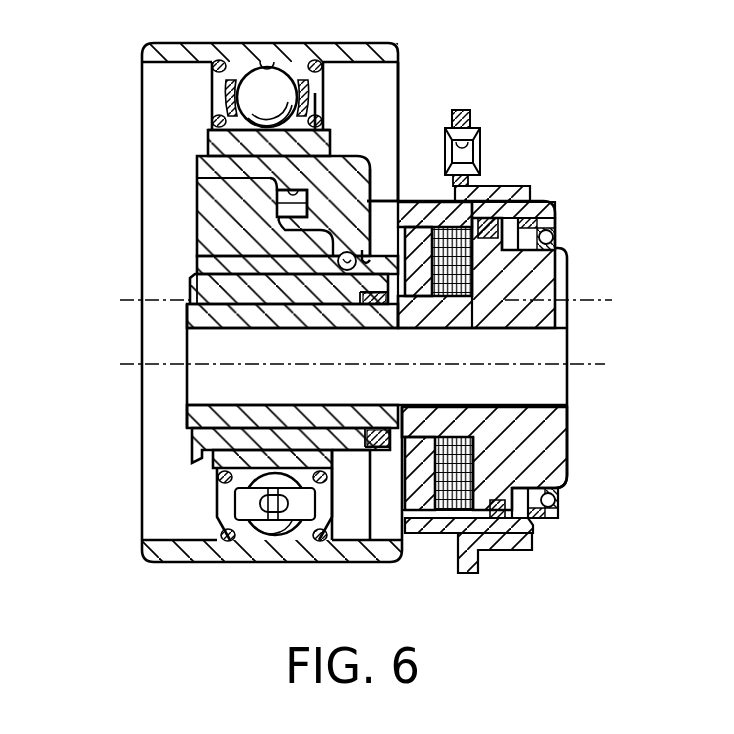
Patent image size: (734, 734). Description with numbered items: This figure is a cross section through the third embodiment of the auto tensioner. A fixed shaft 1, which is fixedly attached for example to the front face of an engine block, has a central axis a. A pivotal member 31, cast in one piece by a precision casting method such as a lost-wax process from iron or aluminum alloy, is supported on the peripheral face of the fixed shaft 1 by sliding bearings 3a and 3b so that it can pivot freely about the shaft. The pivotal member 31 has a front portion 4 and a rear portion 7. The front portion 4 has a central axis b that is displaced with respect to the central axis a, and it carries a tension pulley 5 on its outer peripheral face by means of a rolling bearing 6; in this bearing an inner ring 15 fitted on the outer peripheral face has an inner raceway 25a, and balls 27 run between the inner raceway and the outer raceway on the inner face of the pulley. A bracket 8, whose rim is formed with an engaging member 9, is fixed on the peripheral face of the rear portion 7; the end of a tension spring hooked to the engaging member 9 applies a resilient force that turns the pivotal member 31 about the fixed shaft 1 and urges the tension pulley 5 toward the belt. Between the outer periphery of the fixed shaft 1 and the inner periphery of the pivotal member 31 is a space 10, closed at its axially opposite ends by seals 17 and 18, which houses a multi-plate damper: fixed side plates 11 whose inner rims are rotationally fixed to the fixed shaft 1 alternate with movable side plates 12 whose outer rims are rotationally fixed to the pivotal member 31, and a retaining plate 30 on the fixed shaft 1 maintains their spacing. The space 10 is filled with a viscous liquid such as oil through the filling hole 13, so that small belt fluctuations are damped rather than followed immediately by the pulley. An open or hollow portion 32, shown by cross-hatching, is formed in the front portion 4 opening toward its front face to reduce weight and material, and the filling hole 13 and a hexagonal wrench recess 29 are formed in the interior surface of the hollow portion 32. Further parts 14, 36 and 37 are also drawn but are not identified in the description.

The fixed shaft 1 is at (557, 289).
The sliding bearing 3a is at (192, 290).
The sliding bearing 3b is at (503, 202).
The front portion 4 is at (197, 175).
The tension pulley 5 is at (373, 52).
The rolling bearing 6 is at (278, 87).
The rear portion 7 is at (553, 530).
The bracket 8 is at (463, 113).
The engaging member 9 is at (480, 145).
The space 10 is at (398, 470).
The fixed side plates 11 is at (472, 437).
The movable side plates 12 is at (470, 227).
The filling hole 13 is at (376, 200).
The sleeve ring 14 is at (338, 260).
The inner ring 15 is at (208, 142).
The seal 17 is at (556, 228).
The seal 18 is at (362, 452).
The inner raceway 25a is at (253, 120).
The balls 27 is at (277, 523).
The hexagonal wrench recess 29 is at (303, 180).
The retaining plate 30 is at (422, 533).
The pivotal member 31 is at (386, 120).
The open or hollow portion 32 is at (212, 208).
The ball 36 is at (268, 70).
The upper ball bearing 37 is at (247, 80).
The central axis a is at (173, 365).
The central axis b is at (178, 300).